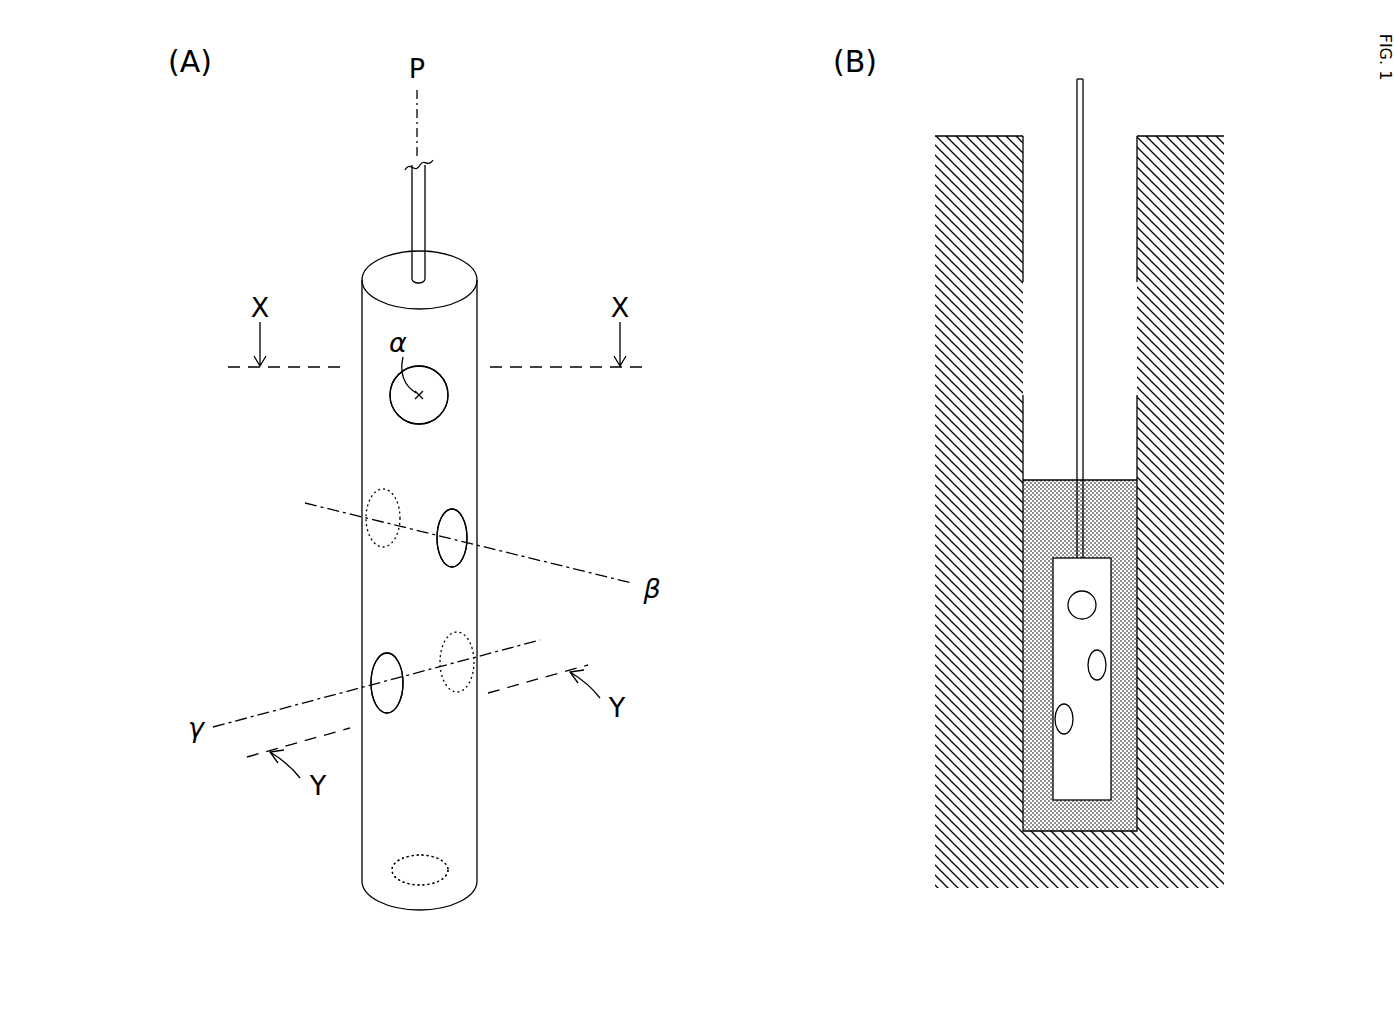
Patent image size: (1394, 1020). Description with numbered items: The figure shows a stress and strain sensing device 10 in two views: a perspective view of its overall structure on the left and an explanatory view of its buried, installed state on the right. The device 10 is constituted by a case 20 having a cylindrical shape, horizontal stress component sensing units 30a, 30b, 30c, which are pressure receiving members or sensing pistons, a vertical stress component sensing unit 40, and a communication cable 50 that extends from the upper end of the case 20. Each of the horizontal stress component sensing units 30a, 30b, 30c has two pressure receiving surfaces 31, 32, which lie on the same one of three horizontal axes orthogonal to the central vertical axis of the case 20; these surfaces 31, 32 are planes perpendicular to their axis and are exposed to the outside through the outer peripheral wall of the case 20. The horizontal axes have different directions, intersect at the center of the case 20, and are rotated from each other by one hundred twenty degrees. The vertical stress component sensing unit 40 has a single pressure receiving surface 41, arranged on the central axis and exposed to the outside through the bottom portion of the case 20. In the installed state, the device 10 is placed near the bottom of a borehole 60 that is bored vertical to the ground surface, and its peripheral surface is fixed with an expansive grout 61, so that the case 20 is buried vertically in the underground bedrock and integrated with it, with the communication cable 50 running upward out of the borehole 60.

The stress and strain sensing device 10 is at (1108, 628).
The case 20 is at (478, 770).
The horizontal stress component sensing unit 30a is at (438, 367).
The horizontal stress component sensing unit 30b is at (480, 527).
The horizontal stress component sensing unit 30c is at (359, 677).
The pressure receiving surface 31 is at (447, 398).
The pressure receiving surface 32 is at (373, 493).
The vertical stress component sensing unit 40 is at (446, 857).
The pressure receiving surface 41 is at (383, 872).
The communication cable 50 is at (425, 212).
The borehole 60 is at (1137, 178).
The expansive grout 61 is at (1105, 480).